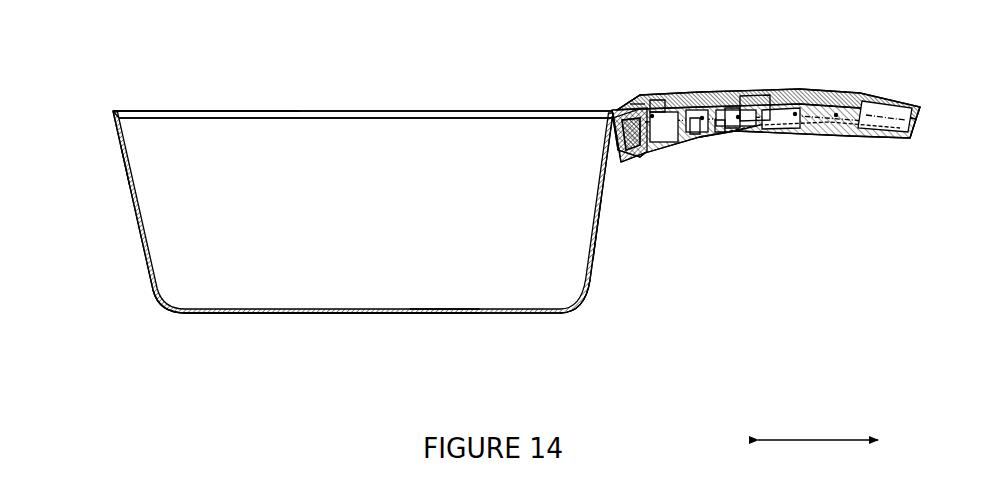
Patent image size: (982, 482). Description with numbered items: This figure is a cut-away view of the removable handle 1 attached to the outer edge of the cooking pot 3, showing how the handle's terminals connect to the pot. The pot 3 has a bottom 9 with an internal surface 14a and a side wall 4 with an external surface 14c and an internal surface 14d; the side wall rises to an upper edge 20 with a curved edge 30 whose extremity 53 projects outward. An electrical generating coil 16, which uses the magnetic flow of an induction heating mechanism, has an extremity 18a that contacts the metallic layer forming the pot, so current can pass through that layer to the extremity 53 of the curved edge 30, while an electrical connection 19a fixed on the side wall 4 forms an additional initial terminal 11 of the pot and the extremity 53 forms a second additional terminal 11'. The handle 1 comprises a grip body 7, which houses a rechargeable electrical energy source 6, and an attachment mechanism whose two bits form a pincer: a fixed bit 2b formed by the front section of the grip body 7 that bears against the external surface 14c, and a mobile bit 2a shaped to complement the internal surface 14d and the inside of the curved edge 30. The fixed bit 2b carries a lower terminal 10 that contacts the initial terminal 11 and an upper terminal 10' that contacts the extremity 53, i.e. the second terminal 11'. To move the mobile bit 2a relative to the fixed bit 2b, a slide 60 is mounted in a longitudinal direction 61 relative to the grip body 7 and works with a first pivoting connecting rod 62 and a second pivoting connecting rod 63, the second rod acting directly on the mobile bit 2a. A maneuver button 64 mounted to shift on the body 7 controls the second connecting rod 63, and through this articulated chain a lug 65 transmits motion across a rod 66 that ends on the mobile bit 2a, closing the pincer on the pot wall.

The removable handle 1 is at (823, 195).
The mobile bit 2a is at (619, 107).
The fixed bit 2b is at (619, 163).
The cooking pot 3 is at (138, 236).
The side wall 4 is at (155, 283).
The rechargeable electrical energy source 6 is at (887, 108).
The grip body 7 is at (893, 140).
The bottom 9 is at (347, 311).
The lower terminal 10 is at (581, 136).
The upper terminal 10' is at (615, 66).
The initial terminal 11 is at (567, 154).
The second additional terminal 11' is at (594, 81).
The internal surface 14a is at (443, 306).
The external surface 14c is at (130, 167).
The internal surface 14d is at (588, 243).
The electrical generating coil 16 is at (433, 315).
The extremity 18a is at (238, 315).
The electrical connection 19a is at (592, 288).
The upper edge 20 is at (128, 104).
The curved edge 30 is at (113, 106).
The extremity 53 is at (107, 111).
The slide 60 is at (757, 98).
The longitudinal direction 61 is at (812, 440).
The first pivoting connecting rod 62 is at (722, 128).
The second pivoting connecting rod 63 is at (697, 125).
The maneuver button 64 is at (744, 136).
The lug 65 is at (737, 98).
The rod 66 is at (657, 97).